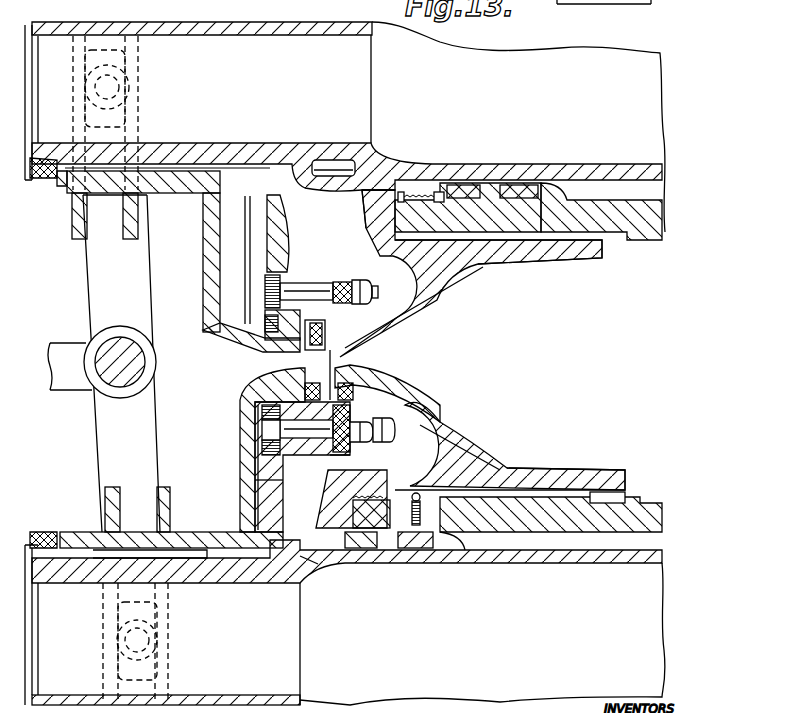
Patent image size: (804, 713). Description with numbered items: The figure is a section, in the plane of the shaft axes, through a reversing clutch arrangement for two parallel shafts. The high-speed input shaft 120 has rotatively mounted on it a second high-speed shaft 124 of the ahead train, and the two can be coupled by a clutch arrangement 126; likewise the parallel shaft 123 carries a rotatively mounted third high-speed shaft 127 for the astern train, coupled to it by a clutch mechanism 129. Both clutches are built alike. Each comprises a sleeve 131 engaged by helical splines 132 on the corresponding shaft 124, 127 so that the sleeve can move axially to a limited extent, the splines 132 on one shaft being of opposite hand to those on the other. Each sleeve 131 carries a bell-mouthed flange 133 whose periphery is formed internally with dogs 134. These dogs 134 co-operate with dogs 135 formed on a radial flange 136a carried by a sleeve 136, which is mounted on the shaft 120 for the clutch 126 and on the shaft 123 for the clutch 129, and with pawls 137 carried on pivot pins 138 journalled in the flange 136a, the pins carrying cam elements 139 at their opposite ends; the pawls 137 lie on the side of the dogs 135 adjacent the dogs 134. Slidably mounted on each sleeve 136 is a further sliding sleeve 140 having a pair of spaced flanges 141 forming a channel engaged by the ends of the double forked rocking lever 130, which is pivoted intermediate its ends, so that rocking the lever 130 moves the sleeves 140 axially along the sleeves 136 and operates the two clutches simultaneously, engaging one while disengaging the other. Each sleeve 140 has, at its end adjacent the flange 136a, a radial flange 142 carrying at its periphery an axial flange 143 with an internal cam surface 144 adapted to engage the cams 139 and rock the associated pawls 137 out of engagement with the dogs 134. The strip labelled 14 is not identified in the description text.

The workpiece strip 14 is at (342, 363).
The high-speed input shaft 120 is at (597, 172).
The parallel shaft 123 is at (578, 560).
The second high-speed shaft 124 is at (627, 220).
The clutch arrangement 126 is at (440, 302).
The third high-speed shaft 127 is at (568, 515).
The clutch mechanism 129 is at (482, 424).
The double forked rocking lever 130 is at (100, 263).
The sleeve 131 is at (563, 247).
The helical splines 132 is at (527, 236).
The bell-mouthed flange 133 is at (403, 326).
The dogs 134 is at (483, 403).
The dogs 135 is at (303, 318).
The sleeve 136 is at (331, 185).
The radial flange 136a is at (226, 487).
The pawls 137 is at (344, 392).
The pivot pins 138 is at (216, 461).
The cam elements 139 is at (272, 293).
The sliding sleeve 140 is at (72, 196).
The spaced flanges 141 is at (93, 245).
The radial flange 142 is at (255, 506).
The axial flange 143 is at (230, 328).
The internal cam surface 144 is at (250, 247).